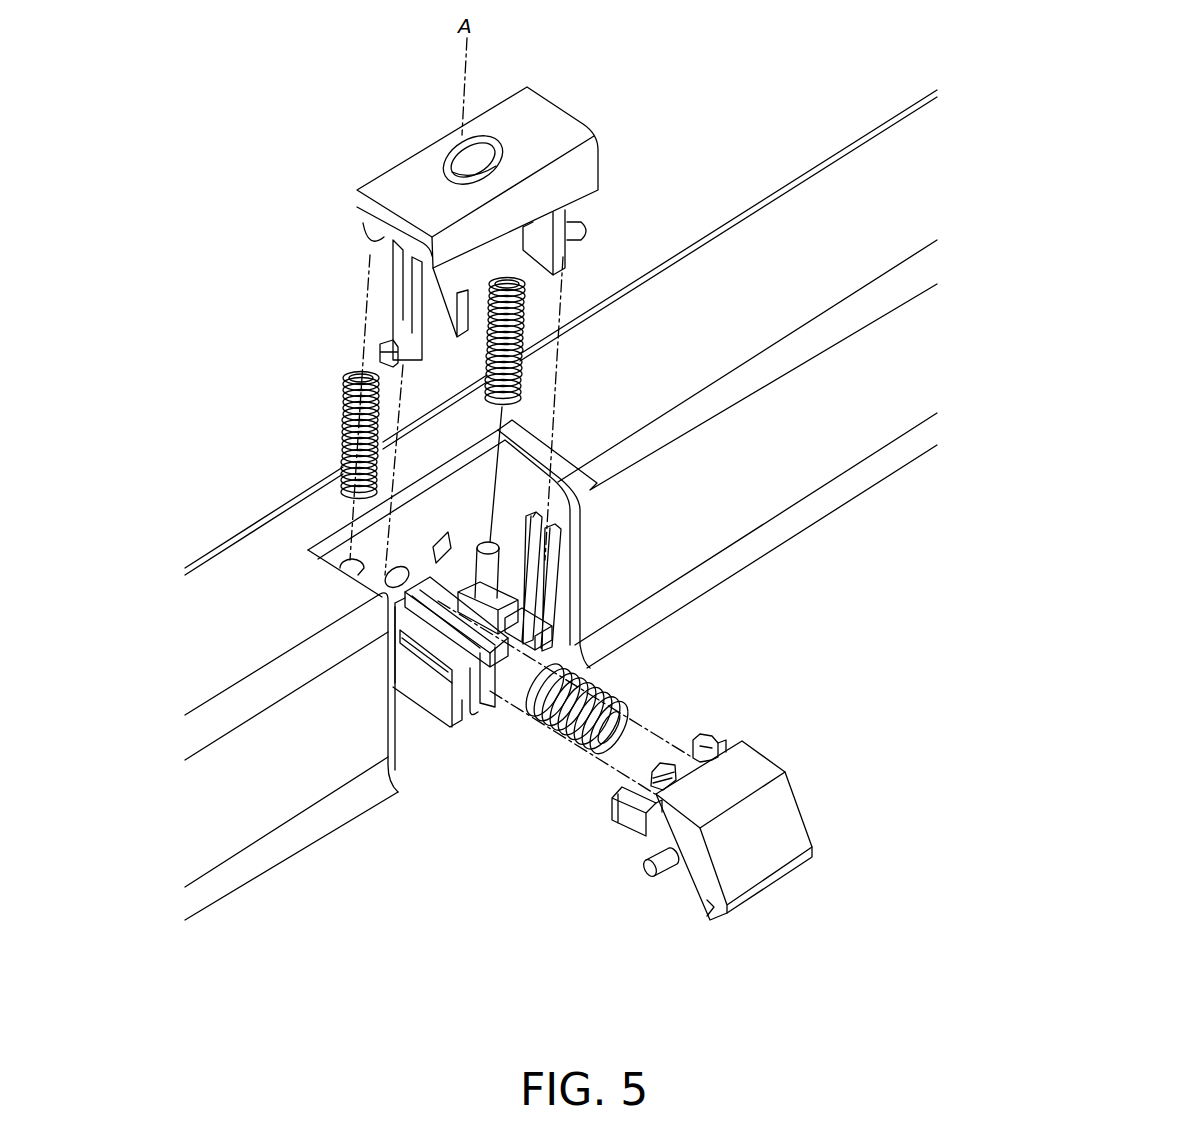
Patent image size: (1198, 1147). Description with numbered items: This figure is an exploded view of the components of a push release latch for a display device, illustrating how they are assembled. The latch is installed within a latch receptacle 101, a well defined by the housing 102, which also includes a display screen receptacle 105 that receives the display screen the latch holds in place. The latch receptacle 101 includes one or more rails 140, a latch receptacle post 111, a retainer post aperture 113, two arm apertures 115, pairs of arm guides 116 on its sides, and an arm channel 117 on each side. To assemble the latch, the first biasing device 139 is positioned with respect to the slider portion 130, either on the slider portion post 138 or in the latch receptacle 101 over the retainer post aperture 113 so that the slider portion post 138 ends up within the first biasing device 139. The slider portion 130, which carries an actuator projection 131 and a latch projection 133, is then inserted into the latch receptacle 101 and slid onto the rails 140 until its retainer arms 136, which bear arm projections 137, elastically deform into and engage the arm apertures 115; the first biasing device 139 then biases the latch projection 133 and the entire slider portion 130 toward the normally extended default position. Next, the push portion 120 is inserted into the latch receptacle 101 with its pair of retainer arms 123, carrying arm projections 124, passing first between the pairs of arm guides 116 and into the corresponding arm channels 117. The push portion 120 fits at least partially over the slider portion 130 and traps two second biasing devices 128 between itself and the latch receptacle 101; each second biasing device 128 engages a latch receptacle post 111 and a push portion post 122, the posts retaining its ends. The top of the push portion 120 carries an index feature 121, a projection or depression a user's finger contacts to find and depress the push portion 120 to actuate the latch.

The latch receptacle 101 is at (556, 450).
The housing 102 is at (850, 177).
The display screen receptacle 105 is at (782, 487).
The latch receptacle post 111 is at (487, 560).
The retainer post aperture 113 is at (400, 570).
The arm apertures 115 is at (446, 533).
The arm guides 116 is at (549, 582).
The arm channel 117 is at (542, 630).
The push portion 120 is at (596, 131).
The index feature 121 is at (470, 157).
The push portion post 122 is at (368, 230).
The retainer arms 123 is at (395, 315).
The arm projections 124 is at (385, 352).
The second biasing device 128 is at (345, 432).
The slider portion 130 is at (695, 922).
The actuator projection 131 is at (656, 876).
The latch projection 133 is at (776, 800).
The retainer arms 136 is at (720, 740).
The arm projections 137 is at (716, 740).
The slider portion post 138 is at (660, 772).
The first biasing device 139 is at (577, 728).
The rails 140 is at (445, 700).